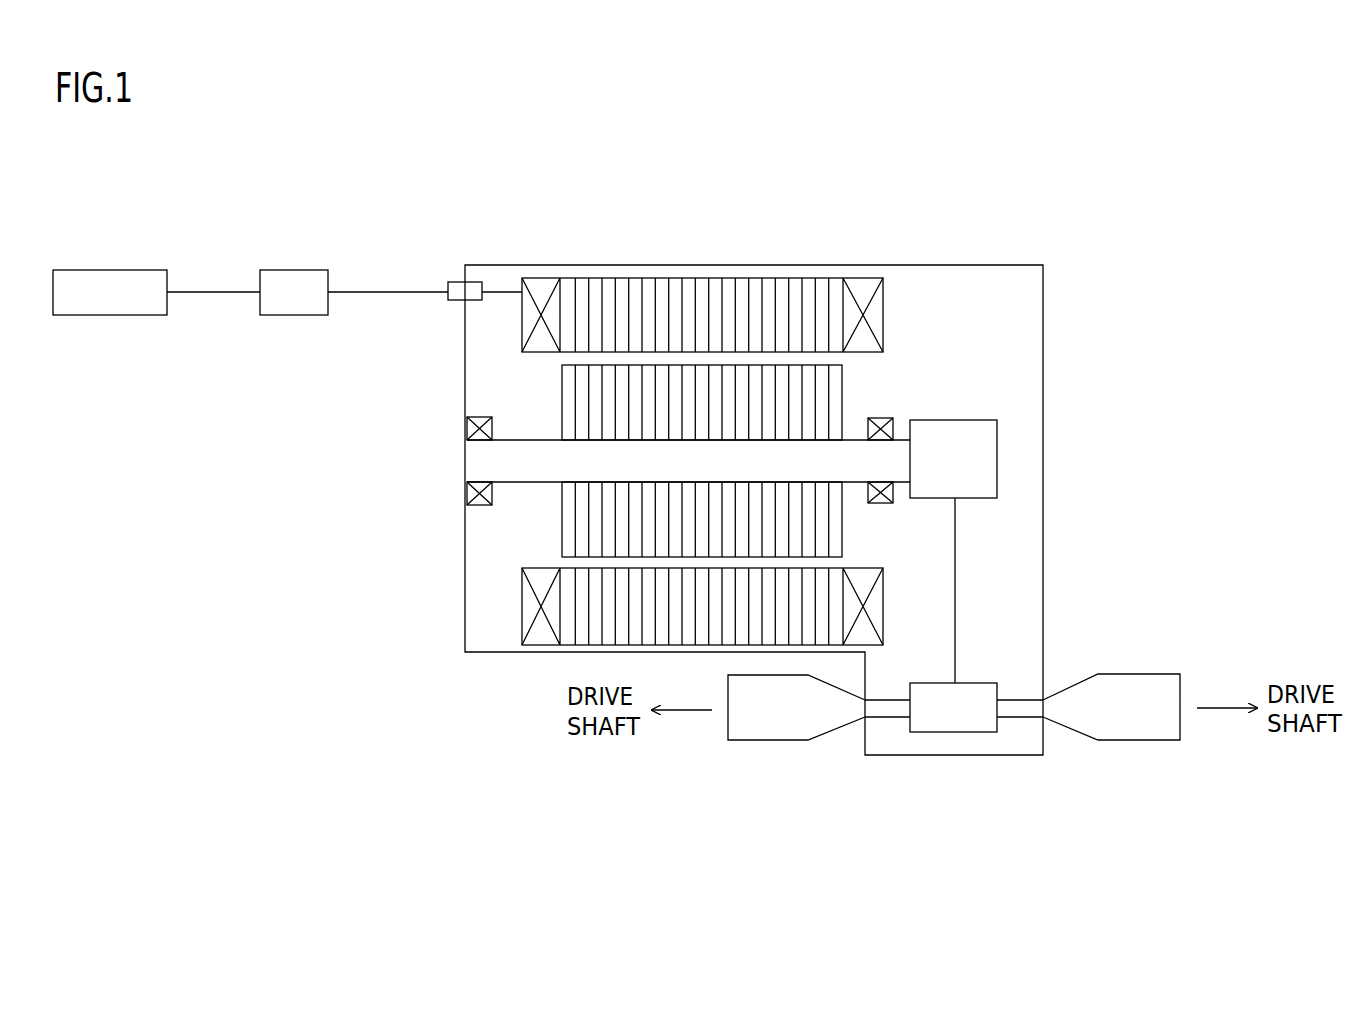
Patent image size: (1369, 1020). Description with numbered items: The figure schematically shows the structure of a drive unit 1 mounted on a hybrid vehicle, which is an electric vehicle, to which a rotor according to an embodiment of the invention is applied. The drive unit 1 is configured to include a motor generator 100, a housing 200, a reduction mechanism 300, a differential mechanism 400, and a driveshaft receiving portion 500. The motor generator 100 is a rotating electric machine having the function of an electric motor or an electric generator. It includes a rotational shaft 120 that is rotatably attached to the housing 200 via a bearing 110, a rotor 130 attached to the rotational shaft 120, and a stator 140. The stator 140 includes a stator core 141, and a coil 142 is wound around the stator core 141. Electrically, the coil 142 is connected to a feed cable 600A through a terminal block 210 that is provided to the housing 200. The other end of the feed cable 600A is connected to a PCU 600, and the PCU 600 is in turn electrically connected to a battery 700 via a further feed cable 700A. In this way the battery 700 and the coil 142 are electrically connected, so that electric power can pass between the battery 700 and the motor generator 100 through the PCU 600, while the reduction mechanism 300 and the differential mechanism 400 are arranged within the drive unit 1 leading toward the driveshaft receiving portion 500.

The drive unit 1 is at (322, 200).
The motor generator 100 is at (860, 173).
The bearing 110 is at (470, 415).
The rotational shaft 120 is at (622, 463).
The rotor 130 is at (702, 392).
The stator 140 is at (890, 215).
The stator core 141 is at (793, 287).
The coil 142 is at (862, 287).
The housing 200 is at (1043, 312).
The terminal block 210 is at (455, 282).
The reduction mechanism 300 is at (975, 458).
The differential mechanism 400 is at (953, 718).
The driveshaft receiving portion 500 is at (780, 718).
The PCU 600 is at (293, 270).
The feed cable 600A is at (370, 292).
The battery 700 is at (112, 270).
The feed cable 700A is at (220, 292).